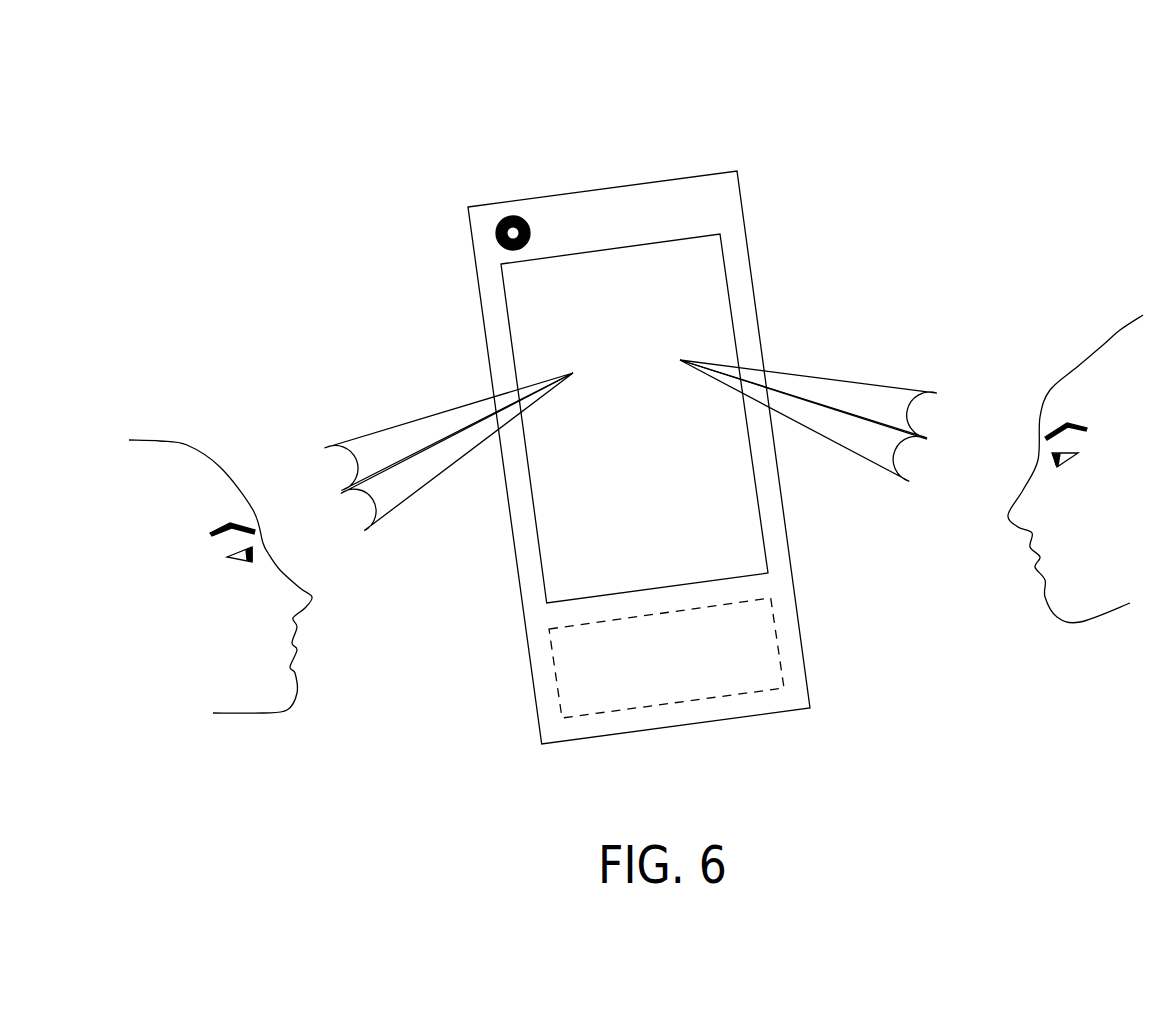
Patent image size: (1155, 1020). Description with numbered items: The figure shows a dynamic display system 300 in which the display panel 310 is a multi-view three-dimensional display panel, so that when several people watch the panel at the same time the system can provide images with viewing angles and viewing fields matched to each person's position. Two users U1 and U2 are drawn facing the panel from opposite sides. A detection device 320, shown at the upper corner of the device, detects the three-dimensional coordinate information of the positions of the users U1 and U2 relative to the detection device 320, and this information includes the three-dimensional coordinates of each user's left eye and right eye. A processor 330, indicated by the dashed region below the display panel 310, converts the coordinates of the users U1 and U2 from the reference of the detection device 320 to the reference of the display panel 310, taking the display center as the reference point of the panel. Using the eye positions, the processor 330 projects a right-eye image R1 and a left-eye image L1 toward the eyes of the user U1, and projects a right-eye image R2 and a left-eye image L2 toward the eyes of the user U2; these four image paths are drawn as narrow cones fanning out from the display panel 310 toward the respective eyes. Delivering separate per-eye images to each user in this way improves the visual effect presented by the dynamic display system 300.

The dynamic display system 300 is at (772, 120).
The display panel 310 is at (503, 292).
The detection device 320 is at (515, 213).
The processor 330 is at (573, 675).
The left-eye image L1 is at (803, 420).
The right-eye image R1 is at (810, 399).
The left-eye image L2 is at (447, 432).
The right-eye image R2 is at (456, 452).
The user U1 is at (1105, 345).
The user U2 is at (175, 457).